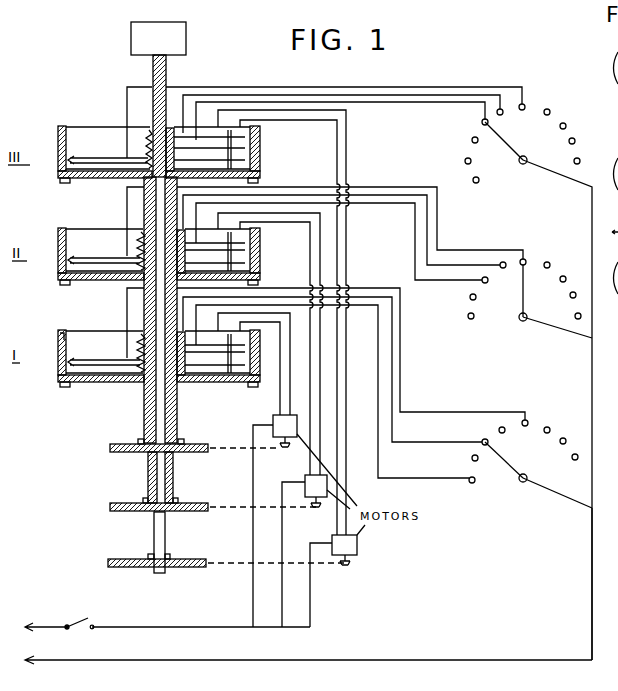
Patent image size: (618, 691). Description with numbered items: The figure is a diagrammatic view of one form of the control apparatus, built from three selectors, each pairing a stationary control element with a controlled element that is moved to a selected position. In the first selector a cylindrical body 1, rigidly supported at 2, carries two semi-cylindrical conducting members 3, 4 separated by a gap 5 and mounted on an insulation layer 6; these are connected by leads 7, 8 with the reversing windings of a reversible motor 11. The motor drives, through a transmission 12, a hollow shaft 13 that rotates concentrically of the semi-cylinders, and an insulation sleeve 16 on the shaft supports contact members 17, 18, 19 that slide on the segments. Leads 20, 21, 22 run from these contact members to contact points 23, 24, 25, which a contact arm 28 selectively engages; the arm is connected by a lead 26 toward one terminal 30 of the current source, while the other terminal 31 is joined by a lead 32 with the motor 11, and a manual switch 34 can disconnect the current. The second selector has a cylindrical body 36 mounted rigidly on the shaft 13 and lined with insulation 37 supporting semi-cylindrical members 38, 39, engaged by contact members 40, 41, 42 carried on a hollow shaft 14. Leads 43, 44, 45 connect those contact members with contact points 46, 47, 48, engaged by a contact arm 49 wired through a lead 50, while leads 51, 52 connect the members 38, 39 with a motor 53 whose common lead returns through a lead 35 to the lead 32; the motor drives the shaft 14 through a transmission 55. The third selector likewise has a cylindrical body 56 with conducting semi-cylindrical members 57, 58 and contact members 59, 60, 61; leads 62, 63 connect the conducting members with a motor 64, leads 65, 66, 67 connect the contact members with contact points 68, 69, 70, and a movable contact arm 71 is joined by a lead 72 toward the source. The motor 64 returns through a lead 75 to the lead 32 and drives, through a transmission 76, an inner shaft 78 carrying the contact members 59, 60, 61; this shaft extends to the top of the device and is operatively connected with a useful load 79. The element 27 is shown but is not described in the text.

The cylindrical body 1 is at (58, 366).
The support 2 is at (62, 387).
The semi-cylindrical conducting member 3 is at (95, 331).
The semi-cylindrical conducting member 4 is at (240, 372).
The gap 5 is at (215, 382).
The insulation layer 6 is at (60, 336).
The lead 7 is at (280, 385).
The lead 8 is at (290, 362).
The reversible motor 11 is at (262, 450).
The transmission 12 is at (222, 448).
The hollow shaft 13 is at (143, 412).
The hollow shaft 14 is at (148, 473).
The insulation sleeve 16 is at (138, 378).
The contact member 17 is at (200, 345).
The contact member 18 is at (215, 365).
The contact member 19 is at (82, 360).
The lead 20 is at (378, 357).
The lead 21 is at (400, 365).
The lead 22 is at (392, 385).
The contact point 23 is at (470, 483).
The contact point 24 is at (482, 443).
The contact point 25 is at (528, 421).
The lead 26 is at (545, 491).
The return conductor 27 is at (592, 585).
The contact arm 28 is at (508, 458).
The terminal 30 is at (30, 663).
The terminal 31 is at (40, 627).
The lead 32 is at (145, 627).
The manual switch 34 is at (82, 619).
The lead 35 is at (282, 585).
The cylindrical body 36 is at (60, 262).
The insulation 37 is at (62, 229).
The semi-cylindrical member 38 is at (95, 229).
The semi-cylindrical member 39 is at (250, 245).
The contact member 40 is at (215, 263).
The contact member 41 is at (200, 243).
The contact member 42 is at (82, 258).
The lead 43 is at (415, 214).
The lead 44 is at (427, 232).
The lead 45 is at (437, 222).
The contact point 46 is at (485, 283).
The contact point 47 is at (505, 262).
The contact point 48 is at (527, 259).
The contact arm 49 is at (525, 297).
The lead 50 is at (554, 327).
The lead 51 is at (276, 348).
The lead 52 is at (279, 344).
The motor 53 is at (305, 490).
The transmission 55 is at (233, 507).
The cylindrical body 56 is at (60, 136).
The conducting semi-cylindrical member 57 is at (95, 127).
The conducting semi-cylindrical member 58 is at (258, 150).
The contact member 59 is at (209, 160).
The contact member 60 is at (197, 137).
The contact member 61 is at (82, 158).
The lead 62 is at (337, 140).
The lead 63 is at (346, 150).
The motor 64 is at (357, 545).
The lead 65 is at (402, 102).
The lead 66 is at (440, 95).
The lead 67 is at (455, 87).
The contact point 68 is at (482, 122).
The contact point 69 is at (503, 113).
The contact point 70 is at (525, 107).
The movable contact arm 71 is at (503, 140).
The lead 72 is at (555, 173).
The lead 75 is at (310, 608).
The transmission 76 is at (212, 570).
The inner shaft 78 is at (165, 540).
The useful load 79 is at (186, 35).